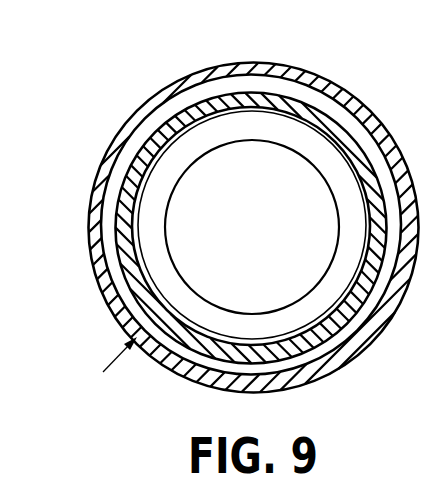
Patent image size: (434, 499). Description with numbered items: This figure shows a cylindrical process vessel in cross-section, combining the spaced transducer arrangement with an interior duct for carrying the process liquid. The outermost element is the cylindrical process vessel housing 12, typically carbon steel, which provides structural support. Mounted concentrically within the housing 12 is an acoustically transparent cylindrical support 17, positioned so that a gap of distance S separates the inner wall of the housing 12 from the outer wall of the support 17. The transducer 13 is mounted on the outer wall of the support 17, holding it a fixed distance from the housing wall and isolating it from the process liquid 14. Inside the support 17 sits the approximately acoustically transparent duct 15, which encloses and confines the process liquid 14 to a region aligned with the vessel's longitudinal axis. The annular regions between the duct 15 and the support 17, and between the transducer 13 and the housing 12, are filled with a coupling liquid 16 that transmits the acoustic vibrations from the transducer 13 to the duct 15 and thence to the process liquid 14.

The cylindrical process vessel housing 12 is at (313, 72).
The transducer 13 is at (220, 93).
The process liquid 14 is at (263, 244).
The interior duct 15 is at (165, 252).
The coupling liquid 16 is at (149, 225).
The cylindrical support 17 is at (291, 110).
The gap distance S is at (172, 310).